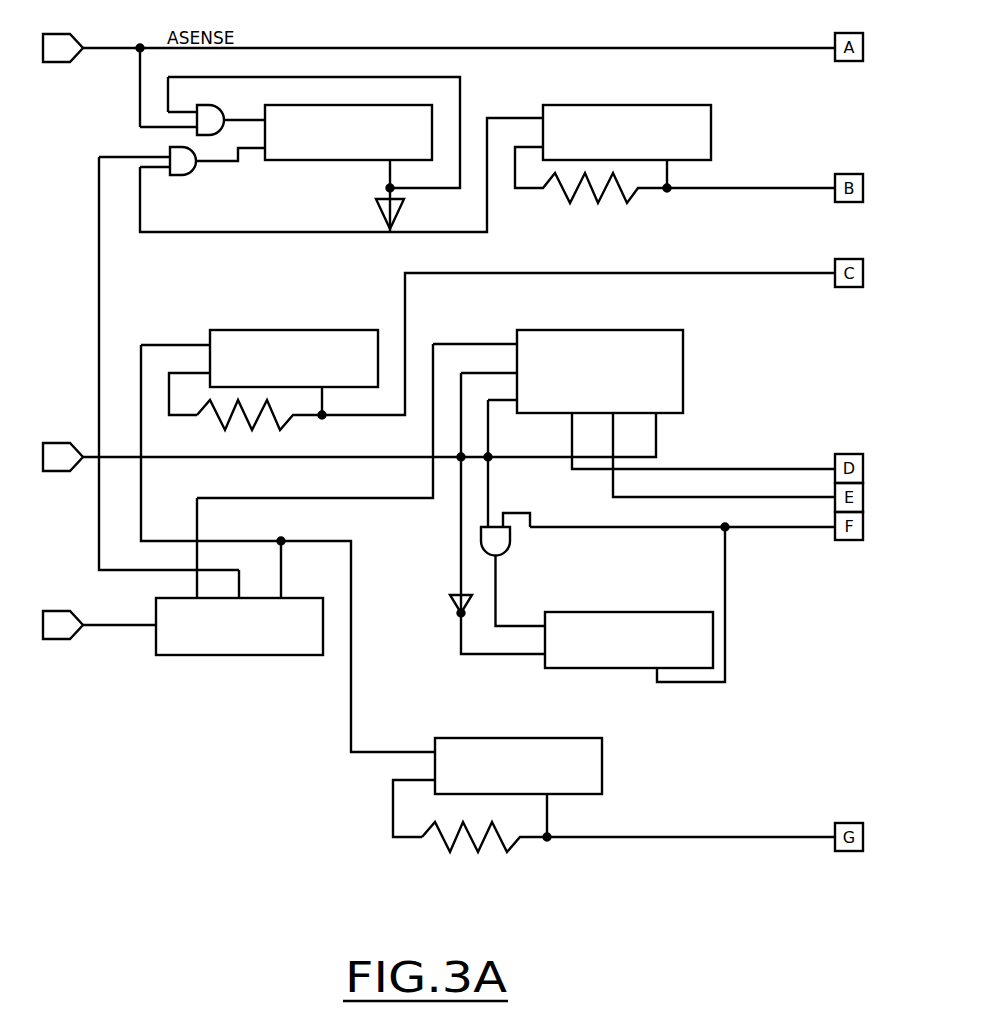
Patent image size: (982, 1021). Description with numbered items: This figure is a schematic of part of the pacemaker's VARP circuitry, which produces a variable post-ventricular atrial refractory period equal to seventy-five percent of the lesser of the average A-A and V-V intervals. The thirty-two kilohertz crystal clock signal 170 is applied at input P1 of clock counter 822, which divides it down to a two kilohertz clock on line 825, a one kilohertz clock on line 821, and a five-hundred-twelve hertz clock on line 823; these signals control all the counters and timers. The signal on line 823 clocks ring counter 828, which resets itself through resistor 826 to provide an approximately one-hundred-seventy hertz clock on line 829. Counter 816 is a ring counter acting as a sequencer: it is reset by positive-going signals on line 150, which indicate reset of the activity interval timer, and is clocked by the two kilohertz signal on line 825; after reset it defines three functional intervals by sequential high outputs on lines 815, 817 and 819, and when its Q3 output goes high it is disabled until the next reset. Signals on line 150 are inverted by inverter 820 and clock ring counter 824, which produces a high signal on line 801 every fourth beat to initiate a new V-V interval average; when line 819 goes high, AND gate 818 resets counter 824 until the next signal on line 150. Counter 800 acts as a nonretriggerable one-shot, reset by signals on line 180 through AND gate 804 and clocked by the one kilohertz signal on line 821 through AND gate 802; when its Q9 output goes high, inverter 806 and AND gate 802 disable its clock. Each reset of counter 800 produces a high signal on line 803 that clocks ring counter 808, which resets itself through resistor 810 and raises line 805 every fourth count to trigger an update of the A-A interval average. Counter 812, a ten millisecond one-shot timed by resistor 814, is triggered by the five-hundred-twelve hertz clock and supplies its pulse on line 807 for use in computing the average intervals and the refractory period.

The line 180 is at (113, 47).
The AND gate 804 is at (195, 134).
The AND gate 802 is at (188, 175).
The counter 800 is at (333, 162).
The inverter 806 is at (400, 210).
The line 803 is at (487, 116).
The ring counter 808 is at (626, 104).
The resistor 810 is at (597, 197).
The line 805 is at (757, 188).
The line 807 is at (688, 273).
The counter 812 is at (232, 329).
The resistor 814 is at (268, 423).
The line 150 is at (86, 450).
The ring counter 816 is at (593, 329).
The line 819 is at (514, 456).
The line 815 is at (665, 469).
The line 817 is at (665, 497).
The AND gate 818 is at (510, 546).
The inverter 820 is at (456, 598).
The ring counter 824 is at (577, 611).
The line 801 is at (725, 570).
The clock counter 822 is at (212, 655).
The crystal clock signal 170 is at (103, 633).
The line 821 is at (182, 569).
The line 825 is at (297, 500).
The line 823 is at (308, 540).
The ring counter 828 is at (538, 737).
The resistor 826 is at (463, 845).
The line 829 is at (598, 837).